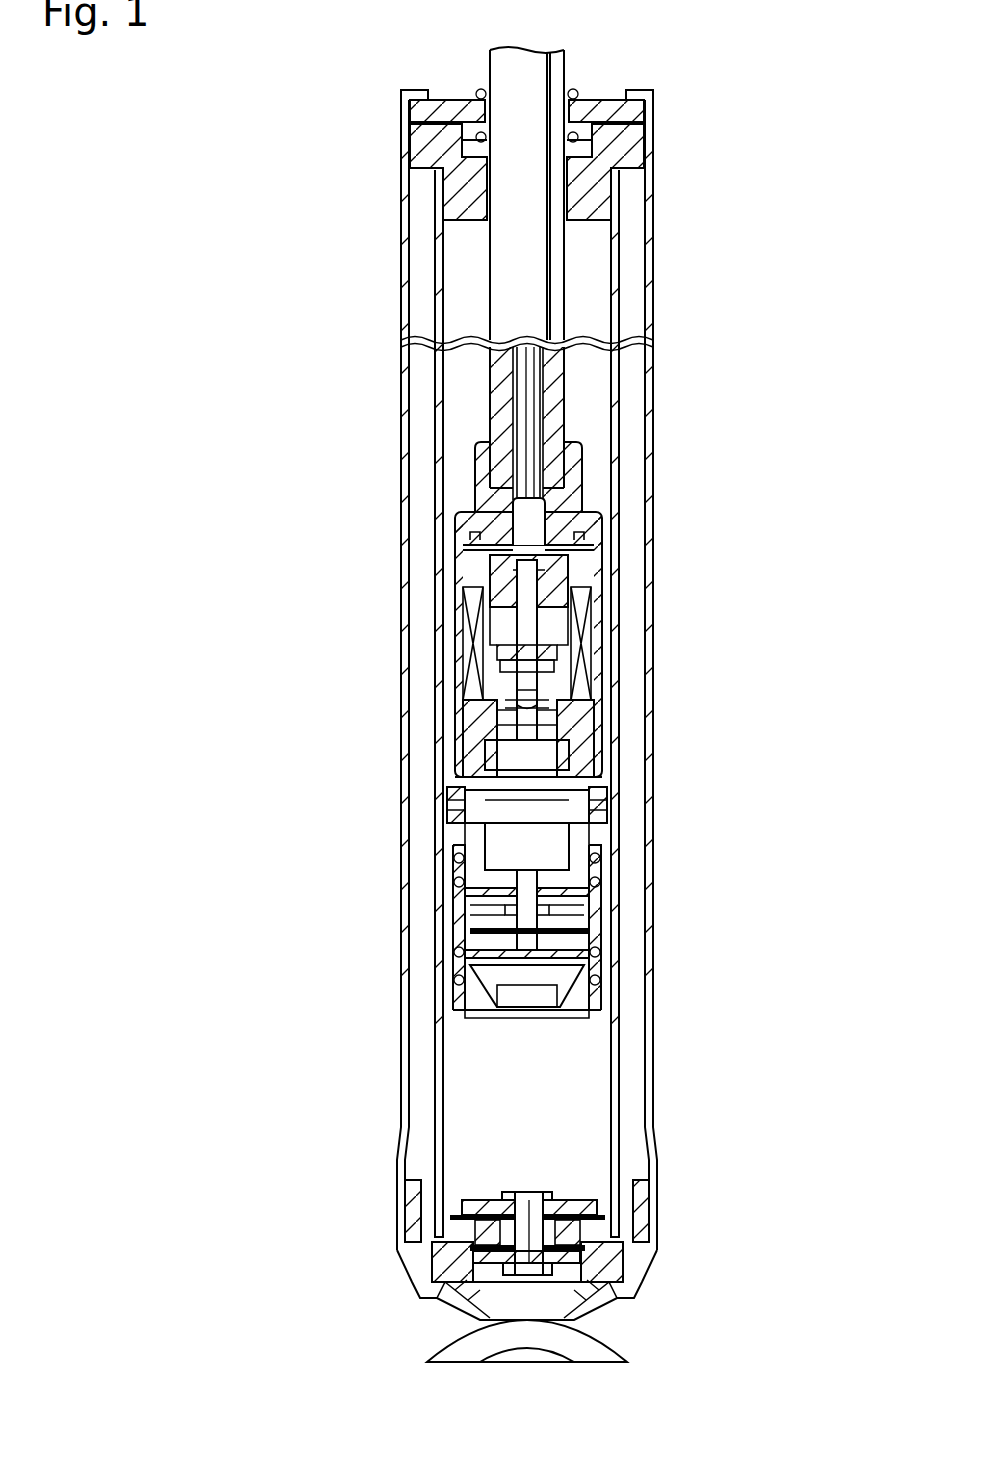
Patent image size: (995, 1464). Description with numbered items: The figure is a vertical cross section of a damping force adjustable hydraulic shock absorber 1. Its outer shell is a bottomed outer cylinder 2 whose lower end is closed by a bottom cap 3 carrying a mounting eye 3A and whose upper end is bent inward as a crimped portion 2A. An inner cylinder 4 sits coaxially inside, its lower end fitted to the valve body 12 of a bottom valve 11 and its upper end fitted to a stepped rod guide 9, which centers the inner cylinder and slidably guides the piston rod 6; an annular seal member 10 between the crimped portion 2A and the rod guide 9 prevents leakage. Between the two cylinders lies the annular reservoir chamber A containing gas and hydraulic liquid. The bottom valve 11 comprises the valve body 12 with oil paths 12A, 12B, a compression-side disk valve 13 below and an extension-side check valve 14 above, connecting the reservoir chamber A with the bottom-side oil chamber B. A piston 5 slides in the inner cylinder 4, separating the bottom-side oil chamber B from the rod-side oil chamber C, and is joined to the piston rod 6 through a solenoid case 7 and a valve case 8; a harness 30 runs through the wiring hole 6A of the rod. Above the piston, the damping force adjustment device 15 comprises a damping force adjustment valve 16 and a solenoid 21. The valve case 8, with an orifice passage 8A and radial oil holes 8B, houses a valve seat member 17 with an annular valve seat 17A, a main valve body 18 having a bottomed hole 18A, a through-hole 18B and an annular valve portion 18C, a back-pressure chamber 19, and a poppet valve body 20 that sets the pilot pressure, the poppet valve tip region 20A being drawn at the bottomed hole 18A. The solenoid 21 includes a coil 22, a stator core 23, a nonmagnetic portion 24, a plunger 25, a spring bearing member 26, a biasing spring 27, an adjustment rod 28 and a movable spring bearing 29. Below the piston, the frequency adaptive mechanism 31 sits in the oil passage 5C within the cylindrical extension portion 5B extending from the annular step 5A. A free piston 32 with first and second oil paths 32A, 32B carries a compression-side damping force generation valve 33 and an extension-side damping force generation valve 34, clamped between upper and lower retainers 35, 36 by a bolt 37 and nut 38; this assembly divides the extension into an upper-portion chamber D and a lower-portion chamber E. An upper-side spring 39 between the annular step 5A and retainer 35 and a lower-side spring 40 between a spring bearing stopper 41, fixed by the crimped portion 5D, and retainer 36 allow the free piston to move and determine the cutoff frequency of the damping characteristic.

The hydraulic shock absorber 1 is at (384, 284).
The outer cylinder 2 is at (653, 250).
The crimped portion 2A is at (640, 92).
The bottom cap 3 is at (583, 1298).
The mounting eye 3A is at (458, 1352).
The inner cylinder 4 is at (618, 375).
The piston 5 is at (580, 792).
The annular step 5A is at (560, 842).
The cylindrical extension portion 5B is at (545, 955).
The oil passage 5C is at (580, 812).
The crimped portion 5D is at (500, 1032).
The piston rod 6 is at (539, 229).
The wiring hole 6A is at (535, 393).
The solenoid case 7 is at (455, 527).
The valve case 8 is at (565, 700).
The orifice passage 8A is at (477, 737).
The oil holes 8B is at (490, 808).
The rod guide 9 is at (440, 155).
The seal member 10 is at (485, 98).
The bottom valve 11 is at (440, 1202).
The valve body 12 is at (470, 1245).
The oil path 12A is at (573, 1242).
The oil path 12B is at (460, 1268).
The compression-side disk valve 13 is at (600, 1285).
The extension-side check valve 14 is at (590, 1212).
The damping force adjustment device 15 is at (595, 501).
The damping force adjustment valve 16 is at (607, 774).
The valve seat member 17 is at (475, 815).
The annular valve seat 17A is at (553, 785).
The main valve body 18 is at (475, 752).
The bottomed hole 18A is at (482, 713).
The through-hole 18B is at (563, 732).
The annular valve portion 18C is at (490, 778).
The back-pressure chamber 19 is at (570, 757).
The poppet valve body 20 is at (545, 703).
The spring seat portion 20A is at (540, 693).
The solenoid 21 is at (450, 547).
The coil 22 is at (572, 625).
The stator core 23 is at (500, 578).
The nonmagnetic portion 24 is at (562, 587).
The plunger 25 is at (510, 605).
The spring bearing member 26 is at (498, 672).
The biasing spring 27 is at (505, 650).
The adjustment rod 28 is at (530, 583).
The movable spring bearing 29 is at (560, 640).
The harness 30 is at (523, 360).
The frequency adaptive mechanism 31 is at (440, 913).
The free piston 32 is at (572, 925).
The first oil path 32A is at (567, 935).
The second oil path 32B is at (480, 905).
The compression-side damping force generation valve 33 is at (580, 900).
The extension-side damping force generation valve 34 is at (490, 926).
The upper retainer 35 is at (462, 860).
The lower retainer 36 is at (503, 960).
The bolt 37 is at (463, 975).
The nut 38 is at (455, 842).
The upper-side spring 39 is at (595, 880).
The lower-side spring 40 is at (572, 990).
The spring bearing stopper 41 is at (470, 1000).
The reservoir chamber A is at (638, 305).
The bottom-side oil chamber B is at (580, 1108).
The rod-side oil chamber C is at (457, 417).
The upper-portion chamber D is at (548, 858).
The lower-portion chamber E is at (585, 1018).